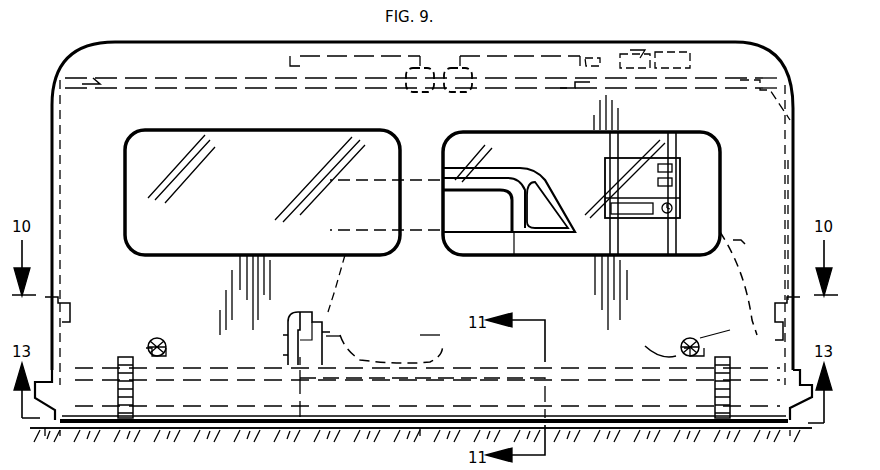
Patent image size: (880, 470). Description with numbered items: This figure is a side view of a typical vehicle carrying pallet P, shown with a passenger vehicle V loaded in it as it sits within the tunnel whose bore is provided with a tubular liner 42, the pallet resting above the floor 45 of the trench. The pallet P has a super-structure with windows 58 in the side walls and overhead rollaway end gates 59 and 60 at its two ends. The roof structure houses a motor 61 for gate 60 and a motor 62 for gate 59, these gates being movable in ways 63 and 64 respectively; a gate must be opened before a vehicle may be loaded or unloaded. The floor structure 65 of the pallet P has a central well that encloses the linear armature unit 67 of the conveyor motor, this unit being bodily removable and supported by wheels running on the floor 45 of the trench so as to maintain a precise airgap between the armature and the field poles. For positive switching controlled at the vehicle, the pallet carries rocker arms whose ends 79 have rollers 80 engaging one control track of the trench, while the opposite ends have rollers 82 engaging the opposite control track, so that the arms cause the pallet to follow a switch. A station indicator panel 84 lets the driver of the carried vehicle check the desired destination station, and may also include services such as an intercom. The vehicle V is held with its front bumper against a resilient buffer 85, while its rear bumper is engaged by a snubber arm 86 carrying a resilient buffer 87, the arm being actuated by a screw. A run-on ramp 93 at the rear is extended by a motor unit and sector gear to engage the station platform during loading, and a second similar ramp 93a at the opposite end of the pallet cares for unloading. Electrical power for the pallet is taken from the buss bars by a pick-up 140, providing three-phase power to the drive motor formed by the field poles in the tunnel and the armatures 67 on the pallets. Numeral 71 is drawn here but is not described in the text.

The pallet P is at (142, 40).
The windows 58 is at (246, 190).
The overhead rollaway end gate 59 is at (786, 170).
The overhead rollaway end gate 60 is at (64, 132).
The motor 61 is at (420, 95).
The motor 62 is at (468, 95).
The way 63 is at (247, 94).
The way 64 is at (580, 92).
The floor structure 65 is at (183, 355).
The linear armature unit 67 is at (440, 348).
The ground/base 71 is at (285, 436).
The rocker arm ends 79 is at (165, 336).
The rollers 80 is at (150, 340).
The rollers 82 is at (178, 468).
The station indicator panel 84 is at (678, 210).
The resilient buffer 85 is at (775, 322).
The snubber arm 86 is at (288, 345).
The resilient buffer 87 is at (305, 320).
The run-on ramp 93 is at (66, 298).
The second ramp 93a is at (780, 345).
The pick-up 140 is at (136, 385).
The tubular liner 42 is at (405, 458).
The floor 45 is at (630, 412).
The passenger vehicle V is at (548, 180).